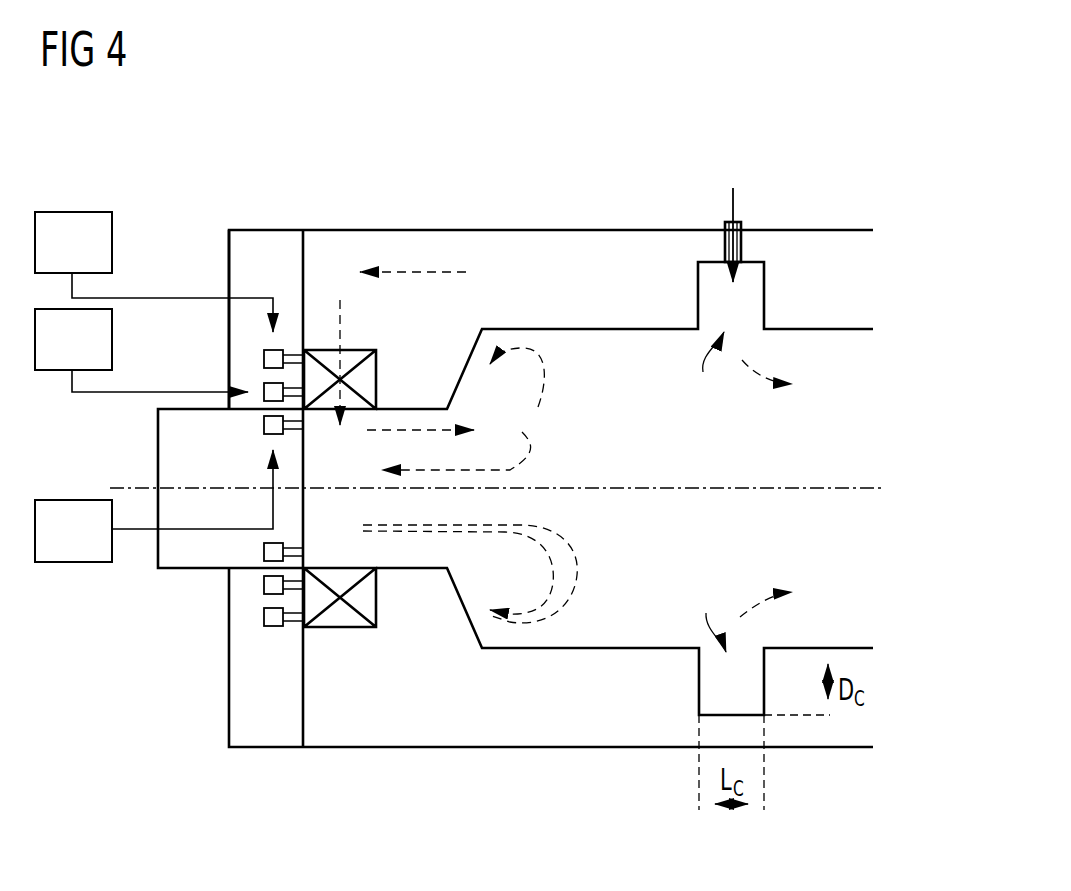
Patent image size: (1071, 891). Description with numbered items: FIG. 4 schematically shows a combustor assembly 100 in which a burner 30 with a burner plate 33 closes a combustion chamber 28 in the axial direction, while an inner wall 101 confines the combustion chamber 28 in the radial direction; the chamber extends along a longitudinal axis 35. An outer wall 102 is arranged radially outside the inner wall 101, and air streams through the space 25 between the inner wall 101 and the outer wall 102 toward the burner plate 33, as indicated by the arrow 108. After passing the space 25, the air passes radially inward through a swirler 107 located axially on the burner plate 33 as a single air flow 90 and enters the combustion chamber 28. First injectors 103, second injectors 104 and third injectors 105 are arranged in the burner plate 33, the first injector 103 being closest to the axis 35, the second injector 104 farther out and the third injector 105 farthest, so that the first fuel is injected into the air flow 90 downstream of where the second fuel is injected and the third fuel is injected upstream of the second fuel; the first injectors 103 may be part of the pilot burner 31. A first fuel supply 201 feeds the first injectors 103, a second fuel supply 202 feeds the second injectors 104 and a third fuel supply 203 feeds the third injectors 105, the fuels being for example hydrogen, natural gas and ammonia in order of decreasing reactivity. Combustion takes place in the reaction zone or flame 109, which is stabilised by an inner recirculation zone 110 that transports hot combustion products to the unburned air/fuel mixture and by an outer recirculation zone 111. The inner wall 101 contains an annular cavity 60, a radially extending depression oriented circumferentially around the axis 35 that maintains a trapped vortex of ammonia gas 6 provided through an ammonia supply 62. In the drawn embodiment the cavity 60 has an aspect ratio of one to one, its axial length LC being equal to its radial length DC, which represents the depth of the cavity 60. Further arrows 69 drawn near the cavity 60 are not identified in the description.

The combustor assembly 100 is at (786, 118).
The burner 30 is at (278, 206).
The burner plate 33 is at (228, 274).
The pilot burner 31 is at (191, 570).
The outer wall 102 is at (568, 229).
The inner wall 101 is at (838, 329).
The space 25 is at (586, 292).
The combustion chamber 28 is at (696, 457).
The longitudinal axis 35 is at (853, 487).
The swirler 107 is at (377, 381).
The air flow 90 is at (341, 318).
The arrow 108 is at (418, 270).
The inner recirculation zone 110 is at (532, 452).
The outer recirculation zone 111 is at (549, 373).
The reaction zone 109 is at (578, 573).
The ammonia gas 6 is at (730, 200).
The ammonia supply 62 is at (727, 244).
The annular cavity 60 is at (710, 492).
The cavity exit flow 69 is at (757, 382).
The third injectors 105 is at (262, 358).
The second injectors 104 is at (262, 391).
The first injectors 103 is at (262, 425).
The third fuel supply 203 is at (92, 258).
The second fuel supply 202 is at (92, 355).
The first fuel supply 201 is at (92, 545).